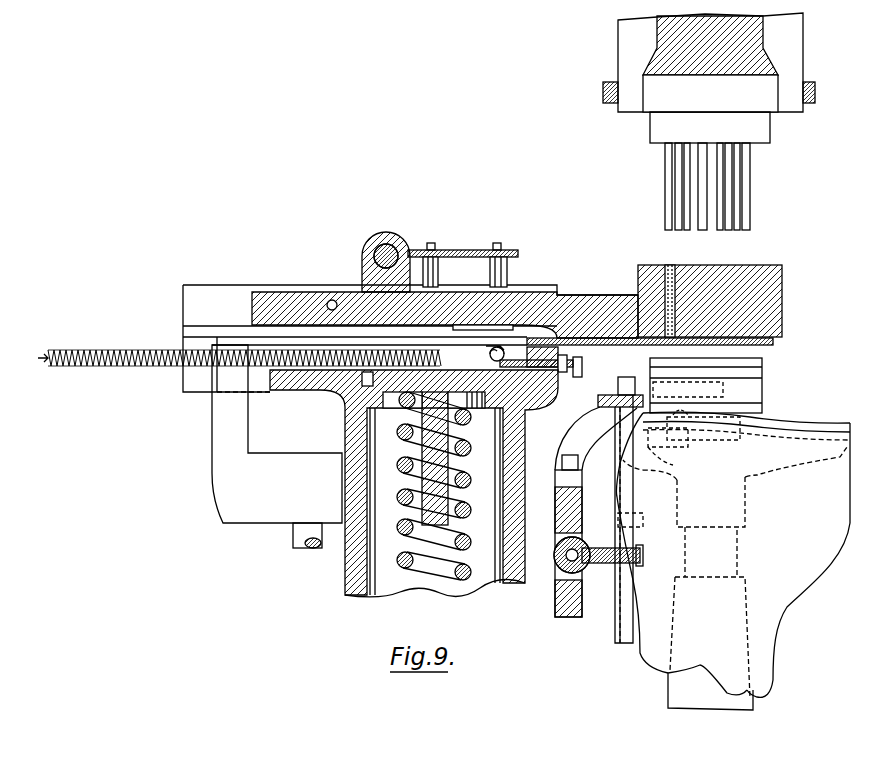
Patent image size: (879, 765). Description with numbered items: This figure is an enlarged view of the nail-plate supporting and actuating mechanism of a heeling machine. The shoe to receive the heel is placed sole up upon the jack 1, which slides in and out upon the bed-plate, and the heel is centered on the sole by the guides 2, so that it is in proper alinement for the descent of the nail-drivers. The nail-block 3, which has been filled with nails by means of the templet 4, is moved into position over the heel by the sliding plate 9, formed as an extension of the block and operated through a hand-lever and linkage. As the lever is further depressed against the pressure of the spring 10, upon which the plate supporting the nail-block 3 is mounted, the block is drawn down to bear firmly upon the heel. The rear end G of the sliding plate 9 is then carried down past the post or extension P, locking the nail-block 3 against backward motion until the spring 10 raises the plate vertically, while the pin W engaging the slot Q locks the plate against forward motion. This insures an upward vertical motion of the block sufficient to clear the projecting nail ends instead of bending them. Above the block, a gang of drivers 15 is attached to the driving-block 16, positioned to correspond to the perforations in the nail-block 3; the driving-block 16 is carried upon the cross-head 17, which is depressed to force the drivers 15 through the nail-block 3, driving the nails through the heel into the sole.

The cross-head 17 is at (793, 48).
The driving-block 16 is at (762, 130).
The drivers 15 is at (722, 186).
The templet 4 is at (463, 257).
The rear end of the sliding plate G is at (302, 292).
The pin W is at (331, 300).
The slot Q is at (448, 308).
The sliding plate 9 is at (603, 298).
The nail-block 3 is at (718, 301).
The guides 2 is at (643, 380).
The post or extension P is at (223, 424).
The spring 10 is at (446, 573).
The jack 1 is at (733, 560).